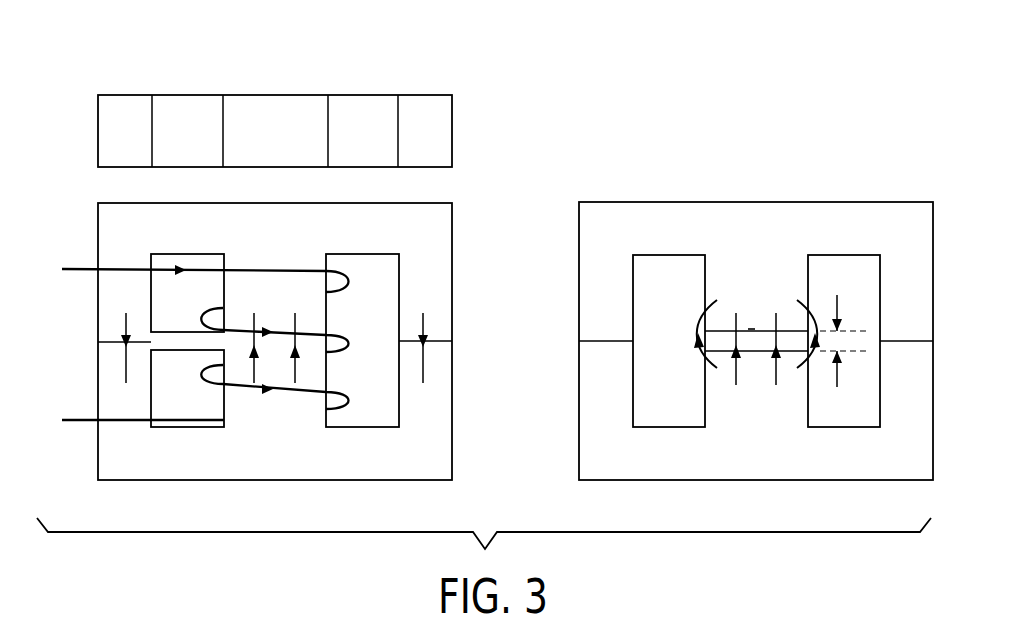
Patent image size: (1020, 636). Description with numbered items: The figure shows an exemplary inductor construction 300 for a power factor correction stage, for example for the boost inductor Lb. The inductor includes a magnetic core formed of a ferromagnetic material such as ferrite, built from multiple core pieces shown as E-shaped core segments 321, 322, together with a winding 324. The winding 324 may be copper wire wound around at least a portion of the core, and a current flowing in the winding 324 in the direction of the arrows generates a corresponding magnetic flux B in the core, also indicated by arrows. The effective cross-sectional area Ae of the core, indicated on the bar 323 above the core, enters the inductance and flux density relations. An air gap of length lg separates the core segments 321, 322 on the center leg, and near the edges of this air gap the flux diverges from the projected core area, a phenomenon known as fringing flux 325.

The inductor construction 300 is at (621, 86).
The E-shaped core segment 321 is at (452, 274).
The E-shaped core segment 322 is at (275, 480).
The core cross-section area Ae 323 is at (441, 95).
The winding 324 is at (82, 269).
The fringing flux 325 is at (700, 326).